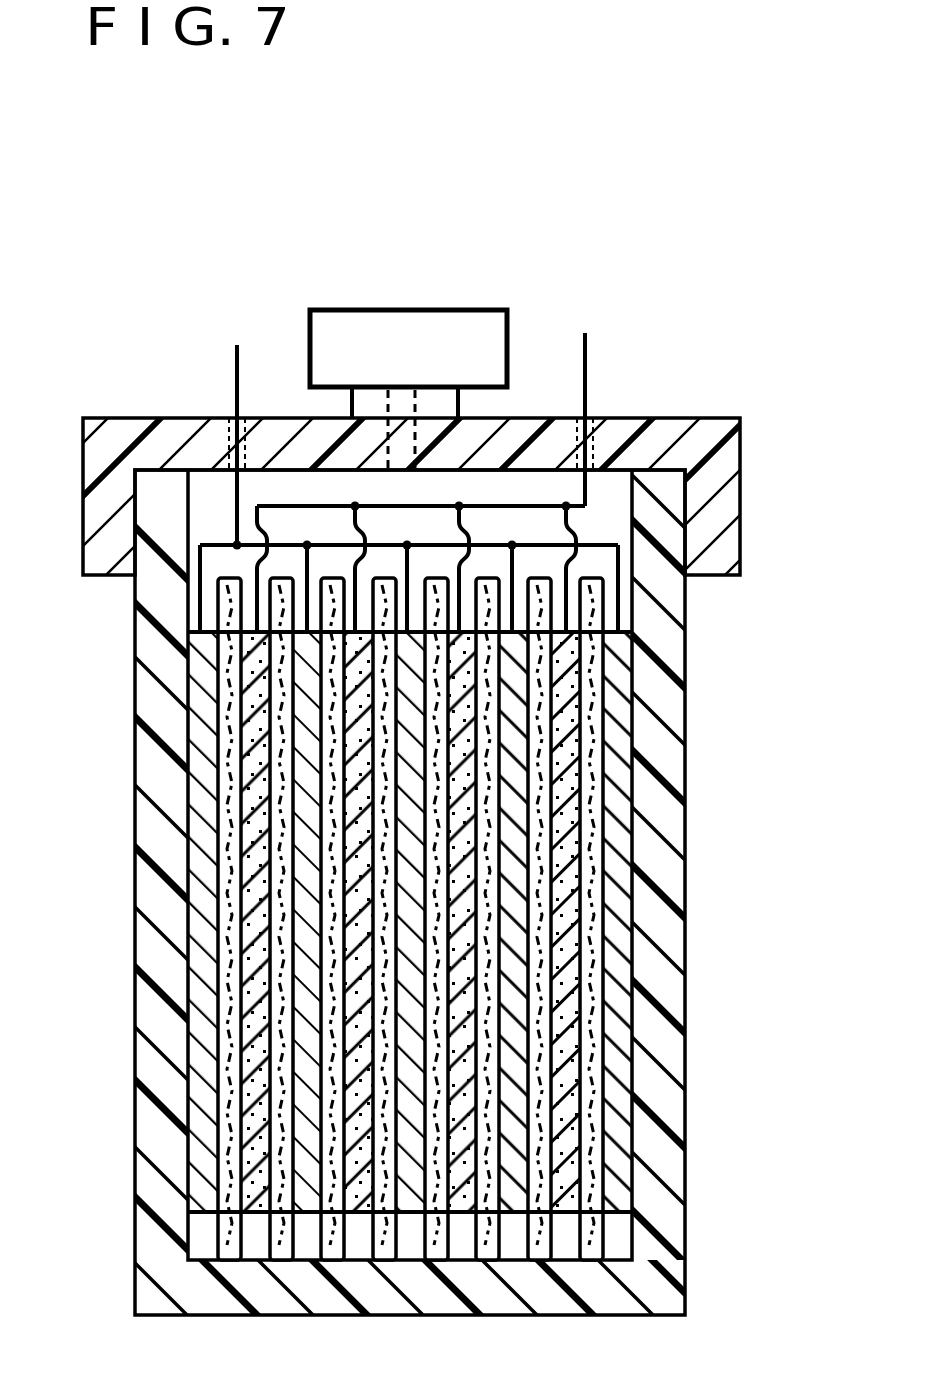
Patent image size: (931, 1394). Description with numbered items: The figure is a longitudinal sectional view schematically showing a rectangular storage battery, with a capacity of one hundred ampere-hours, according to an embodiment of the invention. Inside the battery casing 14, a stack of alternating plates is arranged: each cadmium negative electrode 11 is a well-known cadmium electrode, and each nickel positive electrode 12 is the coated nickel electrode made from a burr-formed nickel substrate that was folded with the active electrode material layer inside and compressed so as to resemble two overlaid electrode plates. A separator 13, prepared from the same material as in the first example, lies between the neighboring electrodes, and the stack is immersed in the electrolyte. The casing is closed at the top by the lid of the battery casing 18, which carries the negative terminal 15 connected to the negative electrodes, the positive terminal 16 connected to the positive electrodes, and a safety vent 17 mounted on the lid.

The cadmium negative electrode 11 is at (212, 935).
The nickel positive electrode 12 is at (572, 1072).
The separator 13 is at (225, 1058).
The battery casing 14 is at (665, 932).
The negative terminal 15 is at (236, 365).
The positive terminal 16 is at (588, 352).
The safety vent 17 is at (430, 325).
The lid of the battery casing 18 is at (712, 442).